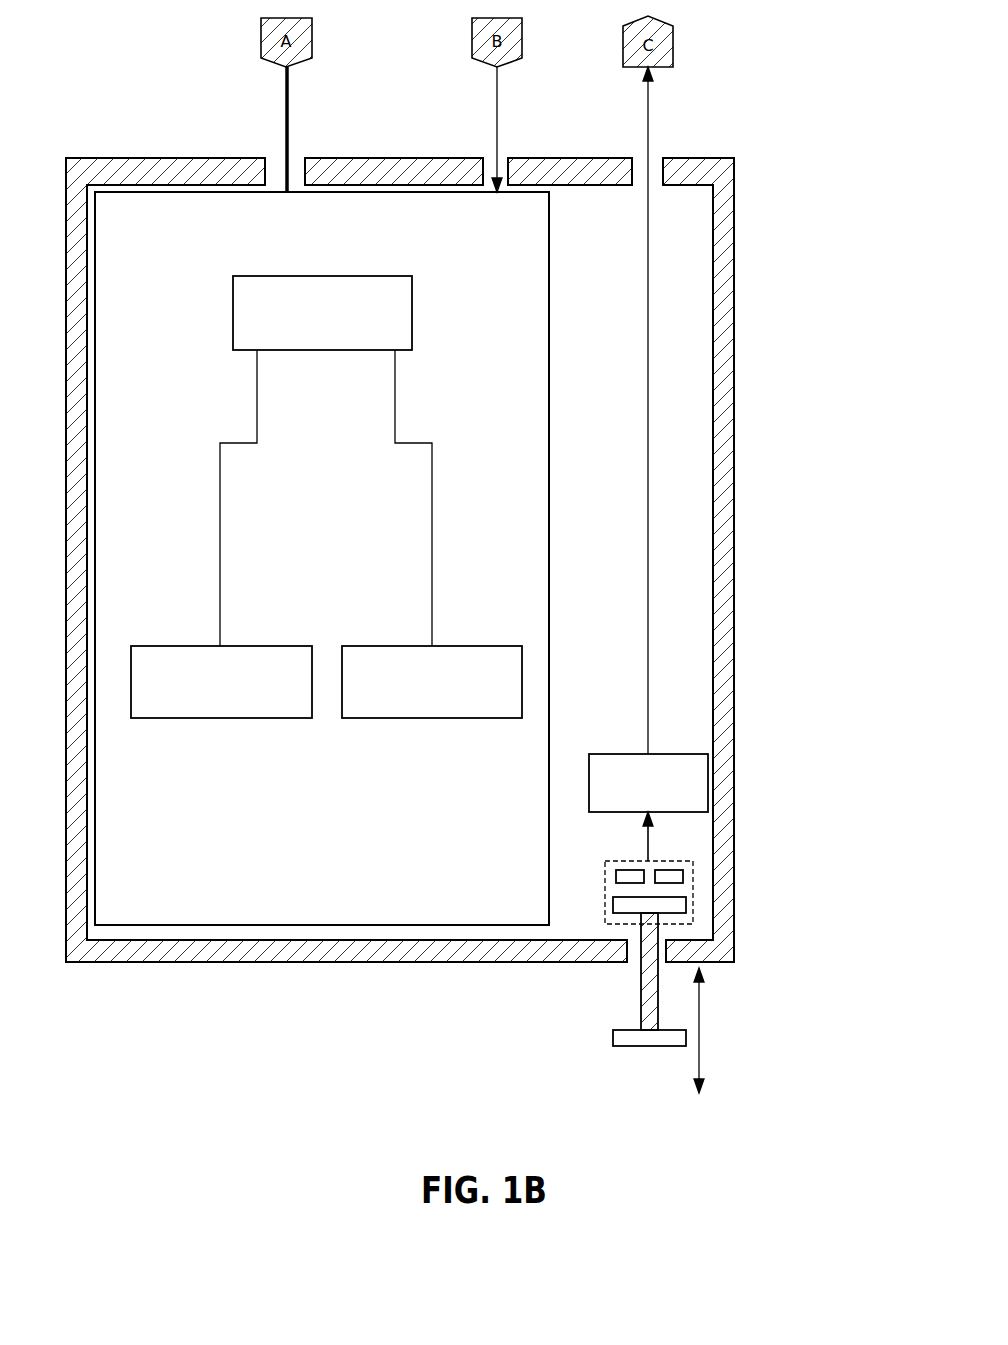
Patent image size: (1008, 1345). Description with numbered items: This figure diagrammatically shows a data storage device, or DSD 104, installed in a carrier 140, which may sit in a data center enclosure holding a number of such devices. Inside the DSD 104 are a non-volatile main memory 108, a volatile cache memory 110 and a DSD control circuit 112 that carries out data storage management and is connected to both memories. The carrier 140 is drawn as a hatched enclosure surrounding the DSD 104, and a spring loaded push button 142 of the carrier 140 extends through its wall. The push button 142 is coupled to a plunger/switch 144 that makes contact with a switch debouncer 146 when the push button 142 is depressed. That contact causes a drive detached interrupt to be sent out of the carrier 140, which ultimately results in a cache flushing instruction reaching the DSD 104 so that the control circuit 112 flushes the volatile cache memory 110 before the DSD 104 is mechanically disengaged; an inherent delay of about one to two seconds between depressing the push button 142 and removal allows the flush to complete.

The data storage device (DSD) 104 is at (549, 412).
The non-volatile main memory 108 is at (450, 646).
The volatile cache memory 110 is at (272, 646).
The DSD control circuit 112 is at (412, 288).
The carrier 140 is at (240, 985).
The push button 142 is at (650, 1082).
The plunger/switch 144 is at (711, 891).
The switch debouncer 146 is at (702, 767).